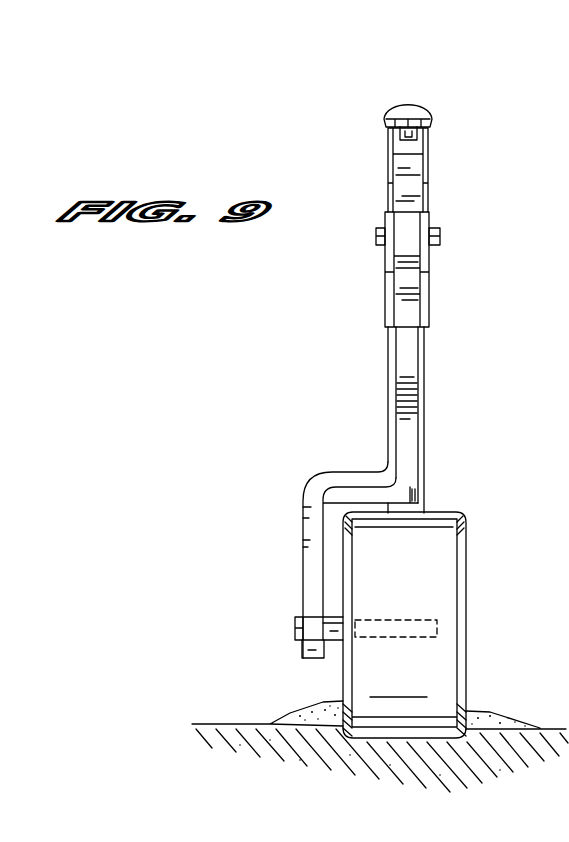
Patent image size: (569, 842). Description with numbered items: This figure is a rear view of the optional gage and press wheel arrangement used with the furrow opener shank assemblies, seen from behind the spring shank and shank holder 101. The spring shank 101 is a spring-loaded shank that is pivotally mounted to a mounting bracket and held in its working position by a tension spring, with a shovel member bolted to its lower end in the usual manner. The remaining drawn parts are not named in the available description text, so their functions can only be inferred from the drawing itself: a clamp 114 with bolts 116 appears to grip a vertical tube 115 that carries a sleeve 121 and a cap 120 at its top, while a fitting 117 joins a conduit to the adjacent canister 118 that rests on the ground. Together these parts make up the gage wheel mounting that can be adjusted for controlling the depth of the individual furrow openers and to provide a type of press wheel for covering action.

The spring shank and shank holder 101 is at (423, 497).
The clamp 114 is at (383, 318).
The tube 115 is at (412, 422).
The bolt 116 is at (440, 237).
The fitting 117 is at (337, 641).
The canister 118 is at (438, 568).
The cap 120 is at (422, 115).
The sleeve 121 is at (428, 165).